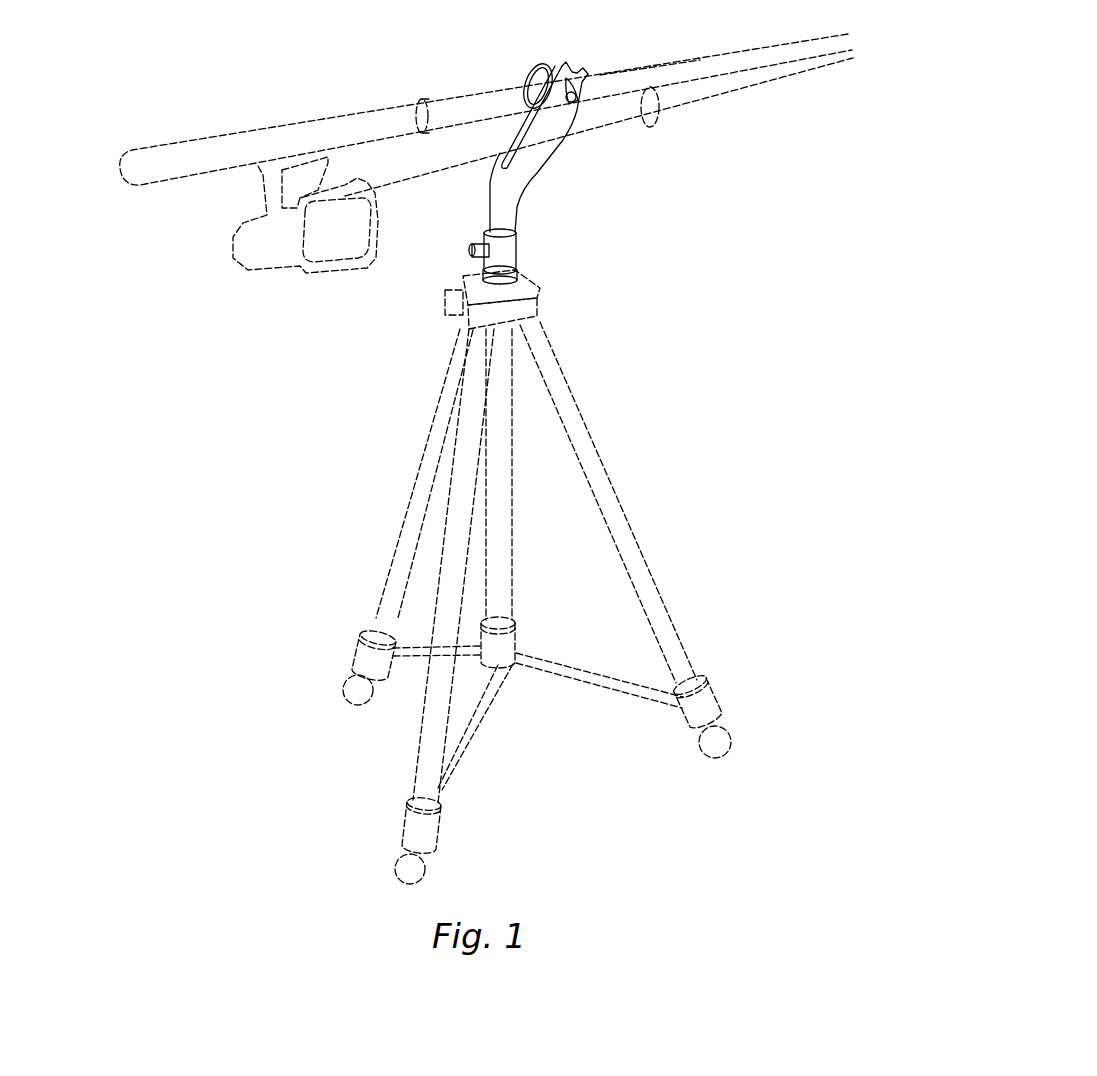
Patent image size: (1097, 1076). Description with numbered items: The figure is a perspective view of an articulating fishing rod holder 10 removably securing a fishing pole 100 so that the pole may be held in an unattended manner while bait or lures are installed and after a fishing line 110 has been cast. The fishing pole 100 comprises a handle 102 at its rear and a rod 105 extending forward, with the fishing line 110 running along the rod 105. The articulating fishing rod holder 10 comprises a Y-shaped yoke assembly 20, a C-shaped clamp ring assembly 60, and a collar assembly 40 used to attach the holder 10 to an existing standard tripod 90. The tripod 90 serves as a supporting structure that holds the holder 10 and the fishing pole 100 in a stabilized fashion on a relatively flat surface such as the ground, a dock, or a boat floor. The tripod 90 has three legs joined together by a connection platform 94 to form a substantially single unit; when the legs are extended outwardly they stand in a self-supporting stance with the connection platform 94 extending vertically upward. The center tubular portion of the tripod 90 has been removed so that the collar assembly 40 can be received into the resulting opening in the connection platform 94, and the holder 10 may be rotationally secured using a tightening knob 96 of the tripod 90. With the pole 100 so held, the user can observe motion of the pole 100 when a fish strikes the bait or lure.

The fishing pole 100 is at (124, 116).
The handle 102 is at (245, 127).
The rod 105 is at (623, 72).
The fishing line 110 is at (732, 93).
The articulating fishing rod holder 10 is at (628, 238).
The yoke assembly 20 is at (520, 118).
The collar assembly 40 is at (481, 243).
The clamp ring assembly 60 is at (538, 68).
The tripod 90 is at (402, 530).
The connection platform 94 is at (513, 289).
The tightening knob 96 is at (446, 311).